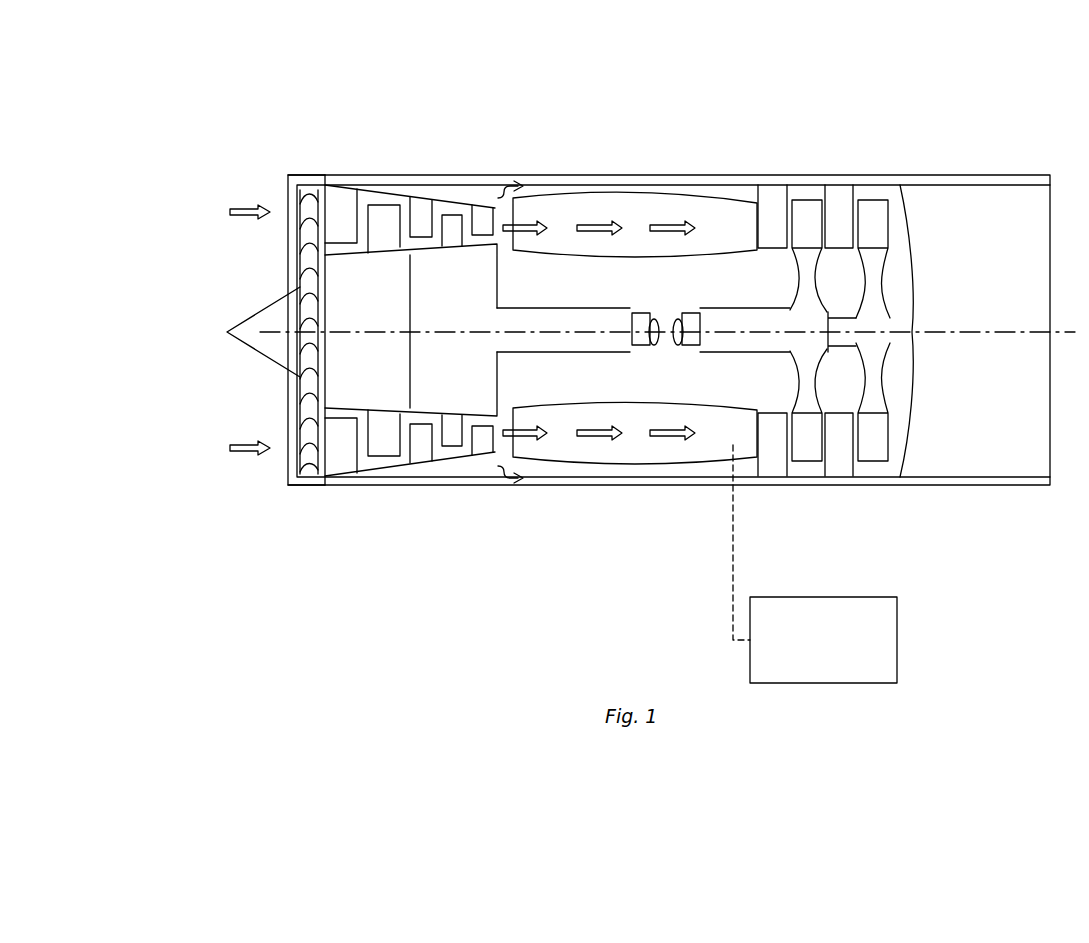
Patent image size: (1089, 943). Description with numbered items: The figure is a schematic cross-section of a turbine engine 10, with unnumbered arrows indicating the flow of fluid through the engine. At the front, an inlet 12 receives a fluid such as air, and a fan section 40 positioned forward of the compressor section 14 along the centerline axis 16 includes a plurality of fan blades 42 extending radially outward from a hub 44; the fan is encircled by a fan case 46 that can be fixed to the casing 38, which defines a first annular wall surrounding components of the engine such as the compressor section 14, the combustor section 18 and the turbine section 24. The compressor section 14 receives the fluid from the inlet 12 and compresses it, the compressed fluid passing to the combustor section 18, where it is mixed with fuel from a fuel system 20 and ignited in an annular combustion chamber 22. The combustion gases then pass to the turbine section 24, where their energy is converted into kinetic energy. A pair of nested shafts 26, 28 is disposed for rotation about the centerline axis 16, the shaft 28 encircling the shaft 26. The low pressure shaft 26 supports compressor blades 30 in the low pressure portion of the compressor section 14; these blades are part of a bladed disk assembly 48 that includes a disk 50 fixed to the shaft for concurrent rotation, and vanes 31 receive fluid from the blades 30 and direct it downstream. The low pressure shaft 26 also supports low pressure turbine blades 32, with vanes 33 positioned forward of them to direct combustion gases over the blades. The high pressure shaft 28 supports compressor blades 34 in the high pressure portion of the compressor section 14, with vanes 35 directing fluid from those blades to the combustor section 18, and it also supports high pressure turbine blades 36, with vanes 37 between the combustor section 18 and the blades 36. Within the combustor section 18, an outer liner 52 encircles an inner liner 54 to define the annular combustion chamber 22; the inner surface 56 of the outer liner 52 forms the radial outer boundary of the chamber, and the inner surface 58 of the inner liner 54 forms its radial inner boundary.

The turbine engine 10 is at (797, 88).
The inlet 12 is at (275, 251).
The compressor section 14 is at (390, 497).
The centerline axis 16 is at (1068, 332).
The combustor section 18 is at (705, 497).
The fuel system 20 is at (838, 649).
The annular combustion chamber 22 is at (700, 251).
The turbine section 24 is at (808, 497).
The low pressure shaft 26 is at (674, 342).
The high pressure shaft 28 is at (575, 320).
The compressor blades 30 is at (385, 212).
The vanes 31 is at (417, 208).
The low pressure turbine blades 32 is at (873, 210).
The vanes 33 is at (840, 210).
The compressor blades 34 is at (447, 224).
The vanes 35 is at (487, 214).
The high pressure turbine blades 36 is at (808, 210).
The vanes 37 is at (775, 205).
The casing 38 is at (760, 165).
The fan section 40 is at (270, 182).
The fan blades 42 is at (308, 385).
The hub 44 is at (308, 318).
The fan case 46 is at (310, 175).
The bladed disk assembly 48 is at (348, 416).
The disk 50 is at (378, 301).
The outer liner 52 is at (553, 194).
The inner liner 54 is at (560, 257).
The inner surface 56 is at (594, 208).
The inner surface 58 is at (633, 257).